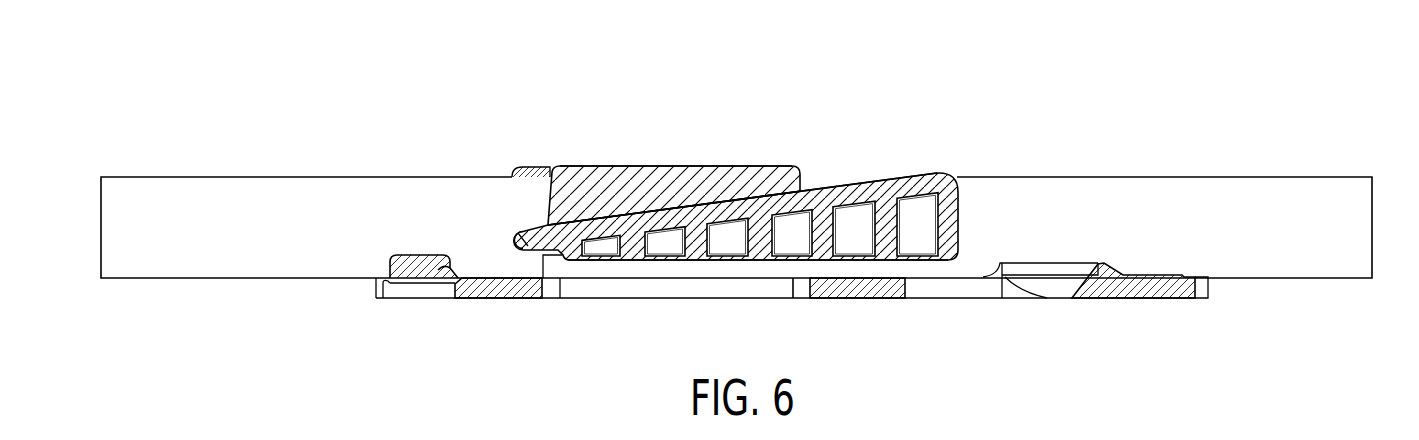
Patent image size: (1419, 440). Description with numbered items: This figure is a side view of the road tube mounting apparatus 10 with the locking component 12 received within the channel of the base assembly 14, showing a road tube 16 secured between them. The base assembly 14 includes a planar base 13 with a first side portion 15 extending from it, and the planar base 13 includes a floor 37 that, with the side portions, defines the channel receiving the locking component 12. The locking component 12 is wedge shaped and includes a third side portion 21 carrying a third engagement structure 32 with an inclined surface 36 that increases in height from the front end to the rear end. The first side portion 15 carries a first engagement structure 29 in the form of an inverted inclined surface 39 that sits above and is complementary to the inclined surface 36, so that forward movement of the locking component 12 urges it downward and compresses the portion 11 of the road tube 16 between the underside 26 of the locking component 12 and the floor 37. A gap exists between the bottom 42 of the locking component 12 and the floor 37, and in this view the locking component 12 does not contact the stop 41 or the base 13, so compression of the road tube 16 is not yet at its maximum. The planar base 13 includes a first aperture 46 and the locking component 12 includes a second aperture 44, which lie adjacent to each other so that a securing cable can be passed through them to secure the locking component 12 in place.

The road tube mounting apparatus 10 is at (597, 125).
The portion of road tube 11 is at (972, 200).
The locking component 12 is at (915, 188).
The planar base 13 is at (1170, 283).
The base assembly 14 is at (1102, 283).
The first side portion 15 is at (730, 187).
The road tube 16 is at (1325, 197).
The third side portion 21 is at (883, 188).
The underside 26 is at (917, 257).
The first engagement structure 29 is at (618, 183).
The third engagement structure 32 is at (848, 193).
The inclined surface 36 is at (823, 197).
The floor 37 is at (572, 280).
The inverted inclined surface 39 is at (668, 193).
The stop 41 is at (428, 267).
The bottom of locking component 42 is at (820, 260).
The second aperture 44 is at (523, 247).
The first aperture 46 is at (410, 273).